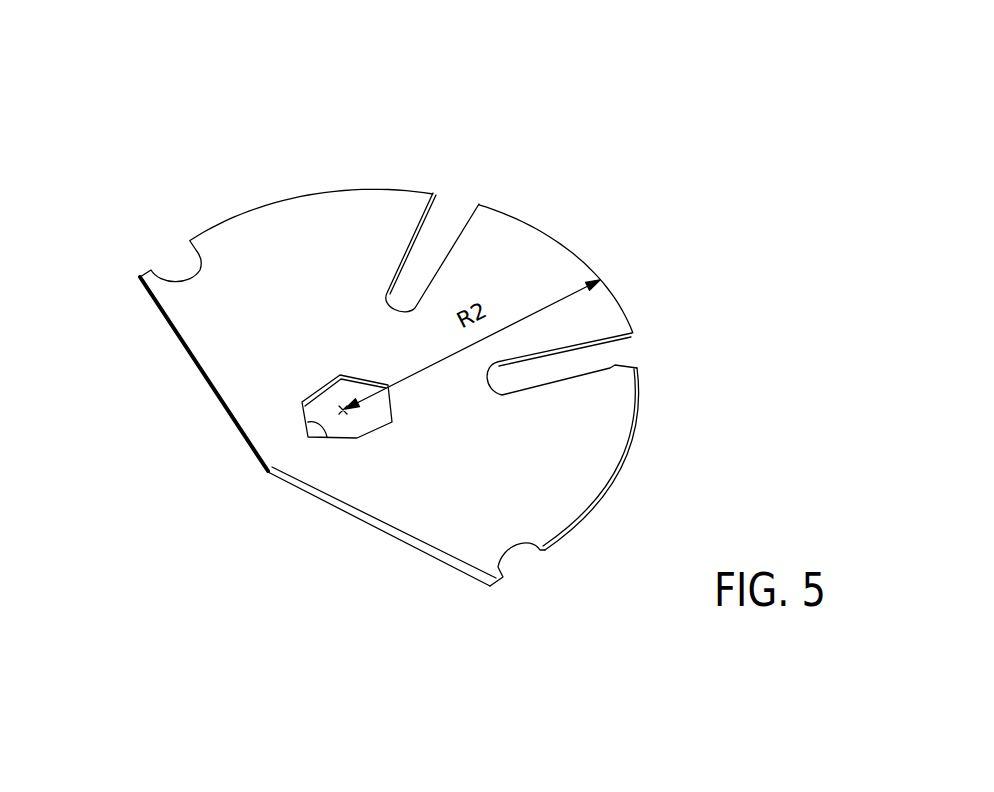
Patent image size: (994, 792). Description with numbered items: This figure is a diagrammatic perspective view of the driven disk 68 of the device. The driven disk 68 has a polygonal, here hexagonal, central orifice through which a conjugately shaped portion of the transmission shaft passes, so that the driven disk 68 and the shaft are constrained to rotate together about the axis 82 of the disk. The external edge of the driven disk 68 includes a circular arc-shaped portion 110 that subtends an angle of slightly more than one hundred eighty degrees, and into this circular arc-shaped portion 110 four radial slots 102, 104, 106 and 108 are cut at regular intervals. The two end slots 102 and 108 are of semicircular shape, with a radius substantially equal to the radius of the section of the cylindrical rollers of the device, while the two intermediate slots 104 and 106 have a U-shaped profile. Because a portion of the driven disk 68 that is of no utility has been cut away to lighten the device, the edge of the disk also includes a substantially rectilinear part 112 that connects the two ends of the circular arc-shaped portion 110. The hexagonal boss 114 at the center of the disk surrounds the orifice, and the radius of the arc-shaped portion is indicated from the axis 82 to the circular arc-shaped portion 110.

The driven disk 68 is at (222, 544).
The axis 82 is at (343, 418).
The end slot 102 is at (186, 252).
The intermediate slot 104 is at (462, 208).
The intermediate slot 106 is at (605, 370).
The end slot 108 is at (518, 545).
The circular arc-shaped portion 110 is at (293, 196).
The substantially rectilinear part 112 is at (205, 380).
The hexagonal boss 114 is at (330, 437).